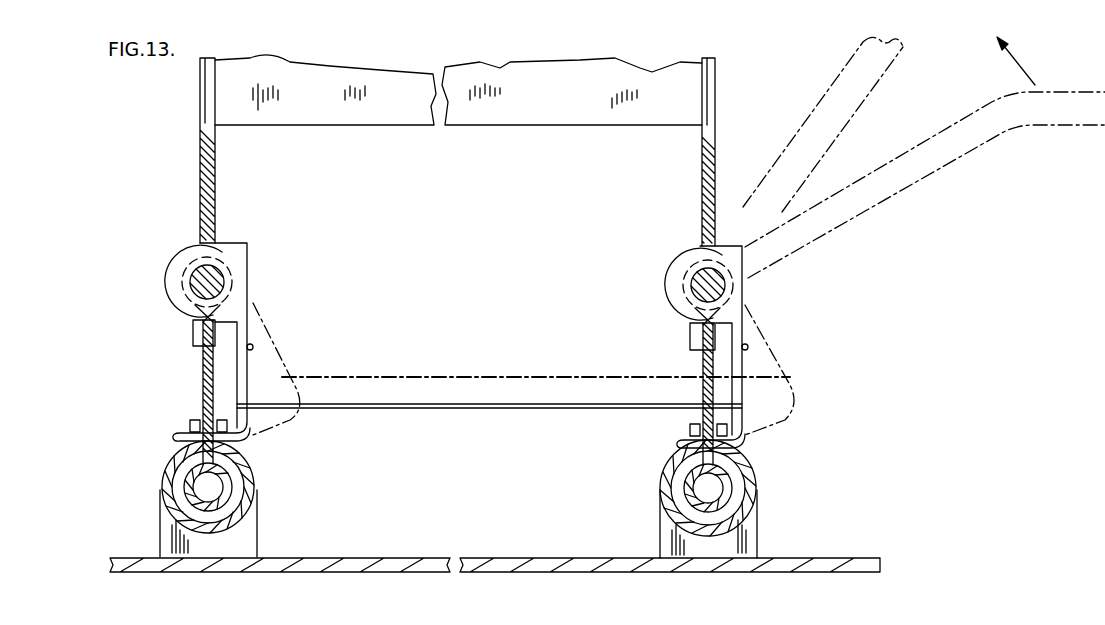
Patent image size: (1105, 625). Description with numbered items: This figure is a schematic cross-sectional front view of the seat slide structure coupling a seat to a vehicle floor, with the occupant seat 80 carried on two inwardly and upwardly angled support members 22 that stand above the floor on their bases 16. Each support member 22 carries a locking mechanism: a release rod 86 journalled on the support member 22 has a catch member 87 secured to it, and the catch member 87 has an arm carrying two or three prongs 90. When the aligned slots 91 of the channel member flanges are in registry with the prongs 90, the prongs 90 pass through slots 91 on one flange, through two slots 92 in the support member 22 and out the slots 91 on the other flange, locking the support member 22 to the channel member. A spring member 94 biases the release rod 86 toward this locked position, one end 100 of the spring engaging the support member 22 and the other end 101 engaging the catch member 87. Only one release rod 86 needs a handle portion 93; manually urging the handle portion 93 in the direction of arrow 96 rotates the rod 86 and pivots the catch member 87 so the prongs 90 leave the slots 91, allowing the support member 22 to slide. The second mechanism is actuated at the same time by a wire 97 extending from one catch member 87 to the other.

The base block 16 is at (236, 554).
The support member 22 is at (215, 176).
The occupant seat 80 is at (578, 100).
The release rod 86 is at (200, 265).
The catch member 87 is at (176, 262).
The prong 90 is at (176, 436).
The slot 91 is at (194, 426).
The slot 92 is at (245, 450).
The handle portion 93 is at (932, 170).
The spring member 94 is at (192, 332).
The arrow 96 is at (1025, 61).
The wire 97 is at (430, 410).
The spring end 100 is at (690, 338).
The spring end 101 is at (748, 346).